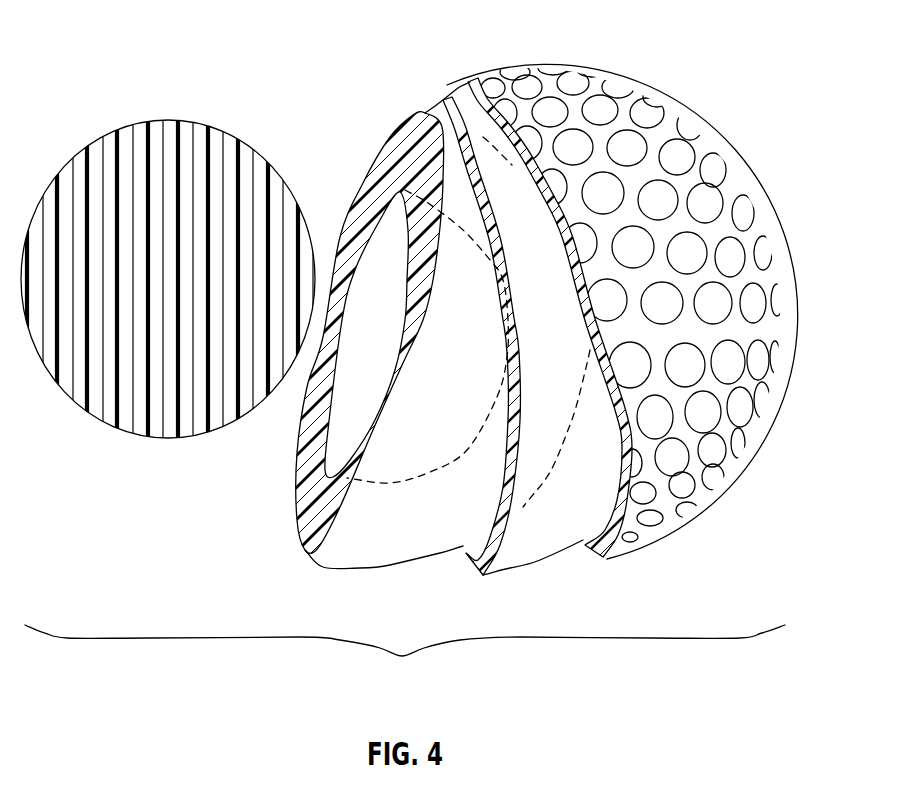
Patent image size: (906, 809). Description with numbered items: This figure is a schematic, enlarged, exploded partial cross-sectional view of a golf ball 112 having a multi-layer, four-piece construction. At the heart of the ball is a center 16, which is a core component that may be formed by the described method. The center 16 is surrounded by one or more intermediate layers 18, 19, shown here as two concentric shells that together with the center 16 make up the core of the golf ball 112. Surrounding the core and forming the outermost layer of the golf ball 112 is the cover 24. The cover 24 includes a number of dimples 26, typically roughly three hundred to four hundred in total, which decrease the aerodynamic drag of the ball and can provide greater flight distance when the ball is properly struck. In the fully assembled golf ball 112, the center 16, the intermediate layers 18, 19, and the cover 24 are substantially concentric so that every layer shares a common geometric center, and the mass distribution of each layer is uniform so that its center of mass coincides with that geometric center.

The center 16 is at (187, 132).
The intermediate layer 18 is at (390, 552).
The intermediate layer 19 is at (540, 545).
The cover 24 is at (643, 90).
The dimples 26 is at (705, 205).
The golf ball 112 is at (405, 659).